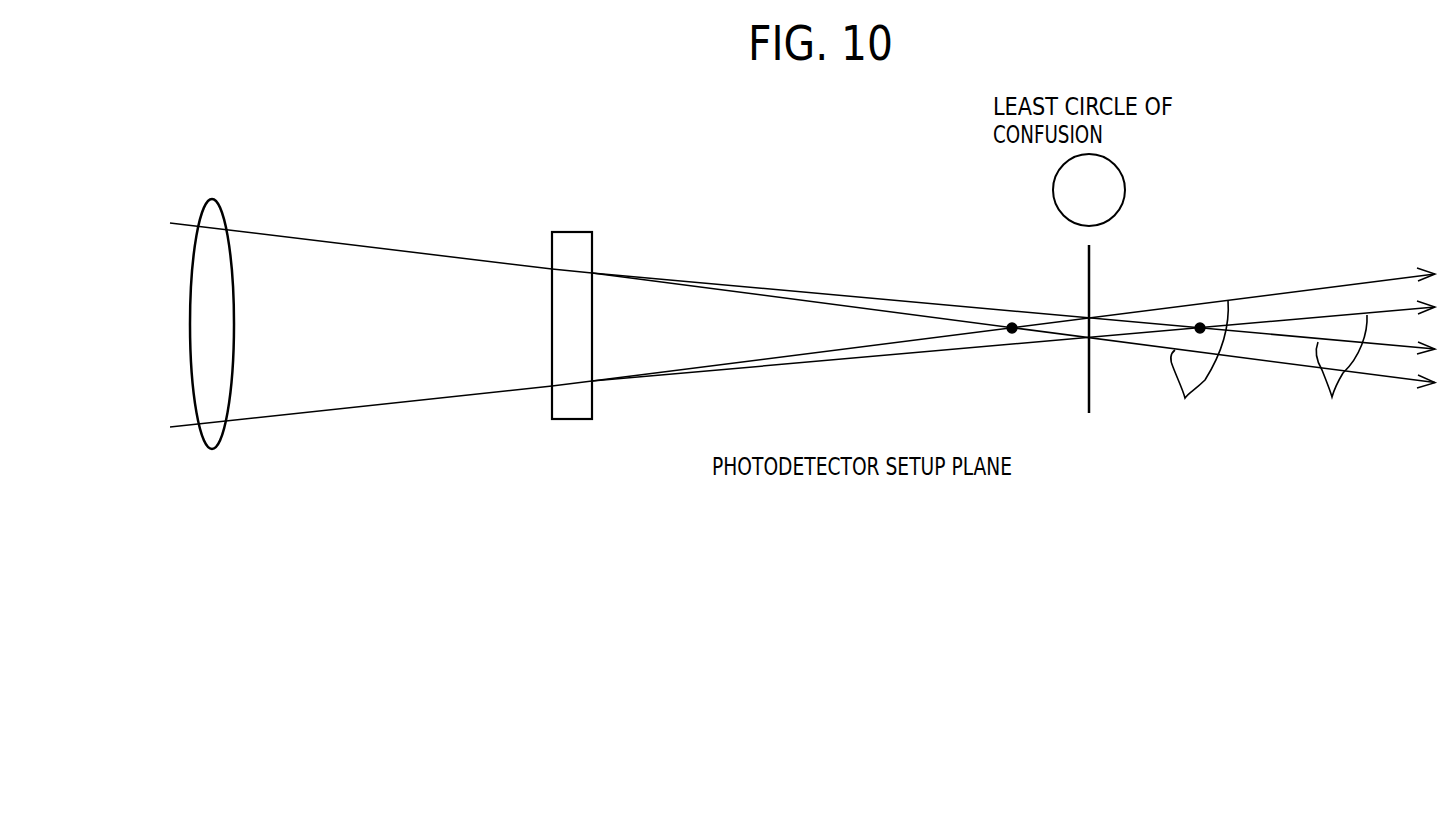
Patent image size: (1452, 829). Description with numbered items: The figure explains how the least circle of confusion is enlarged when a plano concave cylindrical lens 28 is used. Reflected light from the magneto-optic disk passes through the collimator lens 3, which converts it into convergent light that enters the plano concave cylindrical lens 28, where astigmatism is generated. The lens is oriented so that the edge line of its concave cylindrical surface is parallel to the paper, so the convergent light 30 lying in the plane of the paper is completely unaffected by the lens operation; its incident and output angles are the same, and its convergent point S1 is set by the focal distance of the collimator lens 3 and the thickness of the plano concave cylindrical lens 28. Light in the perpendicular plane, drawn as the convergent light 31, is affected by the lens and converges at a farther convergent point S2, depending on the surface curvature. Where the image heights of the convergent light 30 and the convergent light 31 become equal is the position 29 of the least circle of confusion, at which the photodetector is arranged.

The collimator lens 3 is at (222, 390).
The plano concave cylindrical lens 28 is at (578, 358).
The position of least circle of confusion 29 is at (1089, 370).
The convergent light 30 is at (1196, 371).
The convergent light 31 is at (1340, 378).
The convergent point S1 is at (1012, 324).
The convergent point S2 is at (1200, 324).